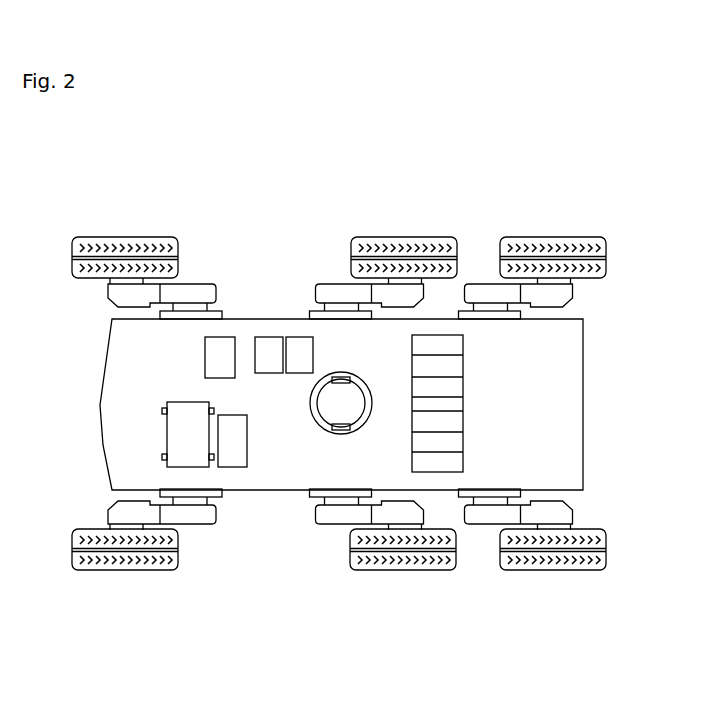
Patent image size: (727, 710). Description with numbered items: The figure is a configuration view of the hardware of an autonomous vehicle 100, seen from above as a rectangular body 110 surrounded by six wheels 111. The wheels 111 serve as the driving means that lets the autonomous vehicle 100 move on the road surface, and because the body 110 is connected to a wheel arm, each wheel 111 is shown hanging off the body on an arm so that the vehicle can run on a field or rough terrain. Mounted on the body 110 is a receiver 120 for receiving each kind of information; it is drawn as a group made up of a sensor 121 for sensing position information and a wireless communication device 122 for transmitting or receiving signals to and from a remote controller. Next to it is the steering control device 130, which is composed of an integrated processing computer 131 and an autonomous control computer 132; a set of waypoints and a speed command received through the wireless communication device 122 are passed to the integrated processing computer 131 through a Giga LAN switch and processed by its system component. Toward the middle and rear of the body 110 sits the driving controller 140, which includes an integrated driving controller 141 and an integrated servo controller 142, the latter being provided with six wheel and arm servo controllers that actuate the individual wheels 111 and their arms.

The autonomous vehicle 100 is at (598, 213).
The body 110 is at (580, 350).
The wheels 111 is at (575, 566).
The receiver 120 is at (228, 155).
The sensor 121 is at (225, 341).
The wireless communication device 122 is at (165, 418).
The steering control device 130 is at (327, 155).
The integrated processing computer 131 is at (273, 339).
The autonomous control computer 132 is at (299, 339).
The driving controller 140 is at (350, 636).
The integrated driving controller 141 is at (240, 433).
The integrated servo controller 142 is at (413, 442).